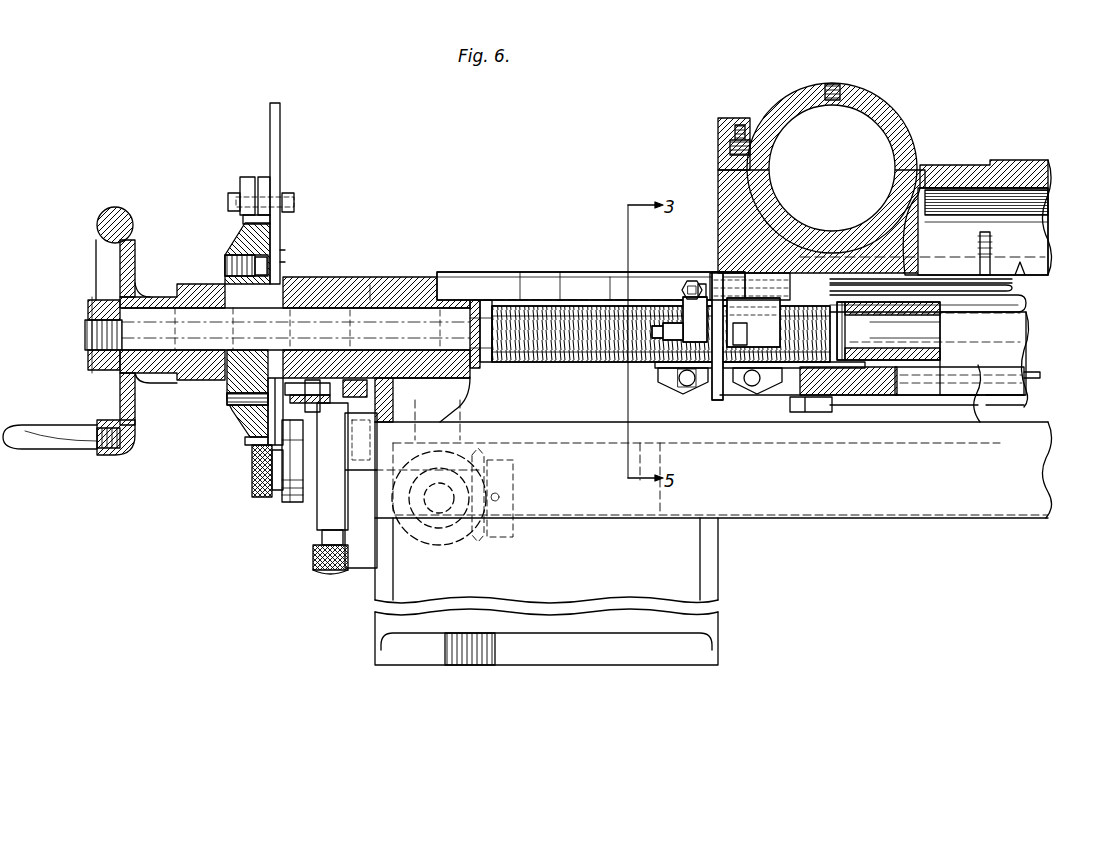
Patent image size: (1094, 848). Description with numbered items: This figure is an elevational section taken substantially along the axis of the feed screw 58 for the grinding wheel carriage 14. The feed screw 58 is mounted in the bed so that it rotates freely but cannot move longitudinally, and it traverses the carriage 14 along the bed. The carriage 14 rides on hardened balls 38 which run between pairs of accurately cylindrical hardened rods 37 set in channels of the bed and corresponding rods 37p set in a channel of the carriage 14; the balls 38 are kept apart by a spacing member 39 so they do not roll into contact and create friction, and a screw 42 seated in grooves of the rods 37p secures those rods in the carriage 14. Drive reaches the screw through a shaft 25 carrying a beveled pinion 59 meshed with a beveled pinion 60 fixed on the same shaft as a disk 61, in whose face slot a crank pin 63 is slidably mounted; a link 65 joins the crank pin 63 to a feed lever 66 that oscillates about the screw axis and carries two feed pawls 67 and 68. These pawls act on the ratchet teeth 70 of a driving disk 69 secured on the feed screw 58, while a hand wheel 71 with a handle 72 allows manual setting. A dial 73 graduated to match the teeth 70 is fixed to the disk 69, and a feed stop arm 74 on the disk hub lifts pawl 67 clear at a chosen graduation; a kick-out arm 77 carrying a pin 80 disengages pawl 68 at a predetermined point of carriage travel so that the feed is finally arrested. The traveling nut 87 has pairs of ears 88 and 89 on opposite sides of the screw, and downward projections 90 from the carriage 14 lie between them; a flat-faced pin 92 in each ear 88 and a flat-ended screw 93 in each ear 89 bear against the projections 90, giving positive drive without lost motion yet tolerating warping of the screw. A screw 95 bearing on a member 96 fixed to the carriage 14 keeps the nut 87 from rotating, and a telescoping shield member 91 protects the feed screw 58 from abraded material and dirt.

The carriage 14 is at (940, 172).
The shaft 25 is at (436, 515).
The hardened rods 37 is at (1013, 300).
The hardened rods 37p is at (1014, 288).
The hardened balls 38 is at (976, 235).
The spacing member 39 is at (930, 281).
The screw 42 is at (995, 258).
The feed screw 58 is at (620, 364).
The beveled pinion 59 is at (448, 525).
The beveled pinion 60 is at (512, 476).
The disk 61 is at (318, 538).
The crank pin 63 is at (265, 500).
The link 65 is at (298, 505).
The feed lever 66 is at (284, 252).
The feed pawl 67 is at (245, 177).
The feed pawl 68 is at (262, 177).
The driving disk 69 is at (246, 432).
The ratchet teeth 70 is at (256, 447).
The hand wheel 71 is at (137, 407).
The handle 72 is at (50, 450).
The dial 73 is at (242, 248).
The feed stop arm 74 is at (180, 385).
The kick-out arm 77 is at (277, 142).
The pin 80 is at (322, 408).
The traveling nut 87 is at (727, 370).
The ears 88 is at (768, 318).
The ears 89 is at (690, 302).
The projections 90 is at (710, 372).
The shield member 91 is at (490, 272).
The pin 92 is at (745, 400).
The screw 93 is at (678, 366).
The screw 95 is at (698, 285).
The member 96 is at (704, 280).